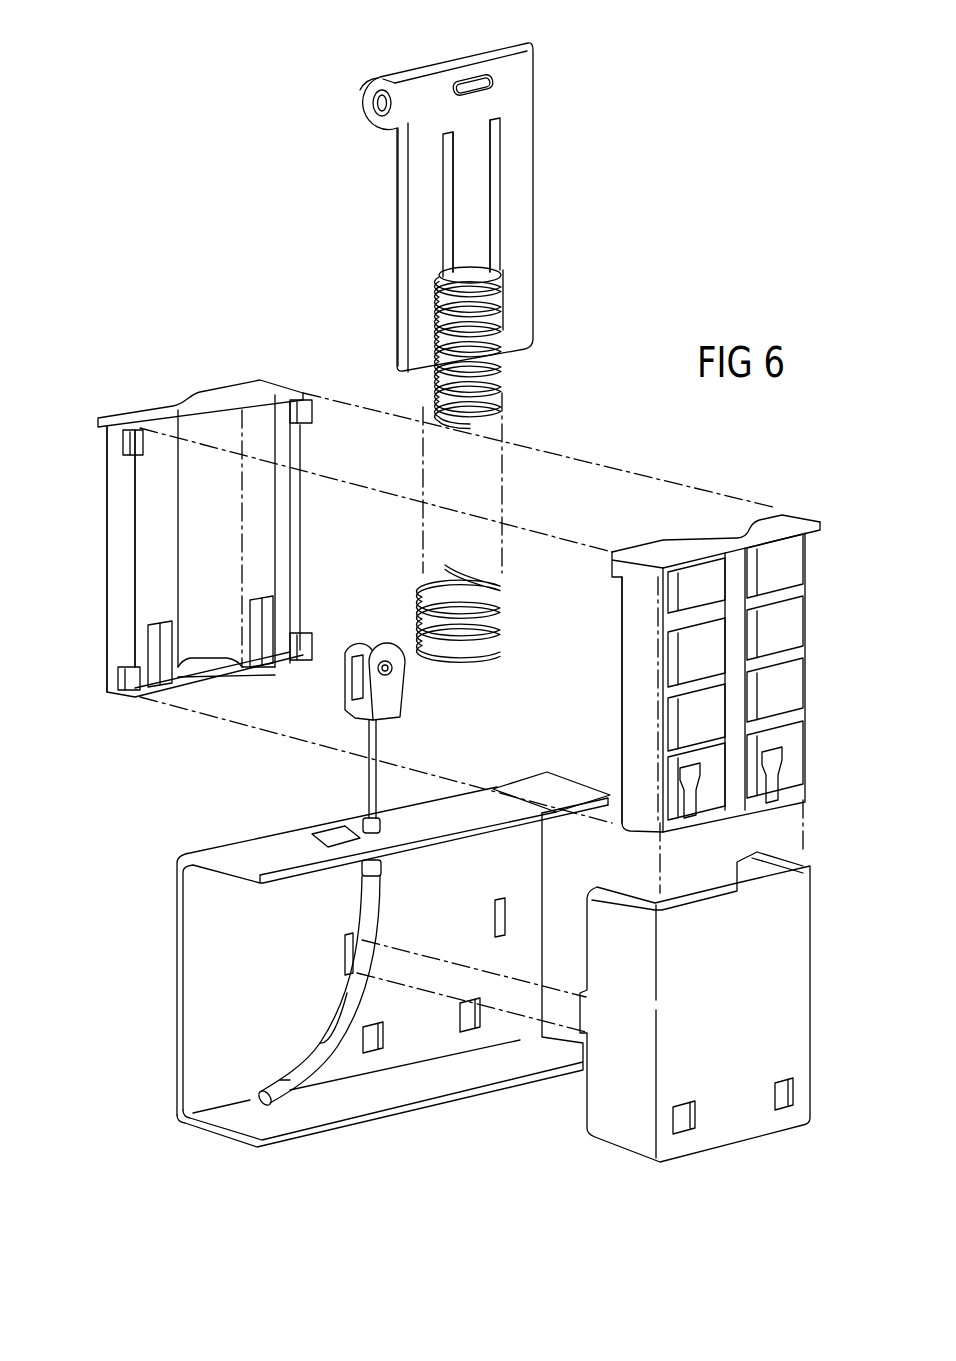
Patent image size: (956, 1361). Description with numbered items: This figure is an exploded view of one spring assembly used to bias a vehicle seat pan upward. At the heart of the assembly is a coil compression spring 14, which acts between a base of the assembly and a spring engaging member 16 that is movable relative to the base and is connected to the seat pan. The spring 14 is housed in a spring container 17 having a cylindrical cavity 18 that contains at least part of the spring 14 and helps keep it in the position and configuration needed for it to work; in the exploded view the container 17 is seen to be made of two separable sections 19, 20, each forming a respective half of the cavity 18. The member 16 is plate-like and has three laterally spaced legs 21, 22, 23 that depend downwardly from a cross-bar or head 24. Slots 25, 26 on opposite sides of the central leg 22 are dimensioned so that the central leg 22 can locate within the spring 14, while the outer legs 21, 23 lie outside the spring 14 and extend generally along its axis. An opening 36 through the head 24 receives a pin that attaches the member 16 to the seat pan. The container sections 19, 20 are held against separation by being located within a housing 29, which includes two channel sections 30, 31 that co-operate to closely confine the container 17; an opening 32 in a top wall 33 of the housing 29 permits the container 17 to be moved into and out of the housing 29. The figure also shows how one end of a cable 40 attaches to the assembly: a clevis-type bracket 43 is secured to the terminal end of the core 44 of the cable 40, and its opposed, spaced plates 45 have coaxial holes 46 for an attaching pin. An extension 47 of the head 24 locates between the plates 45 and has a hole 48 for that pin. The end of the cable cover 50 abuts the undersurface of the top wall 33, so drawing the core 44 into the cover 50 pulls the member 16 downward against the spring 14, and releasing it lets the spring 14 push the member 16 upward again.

The coil compression spring 14 is at (495, 352).
The spring engaging member 16 is at (451, 186).
The spring container 17 is at (425, 581).
The cylindrical cavity 18 is at (204, 420).
The container section 19 is at (152, 509).
The container section 20 is at (632, 608).
The outer leg 21 is at (420, 235).
The central leg 22 is at (472, 158).
The outer leg 23 is at (522, 285).
The head 24 is at (405, 78).
The slot 25 is at (447, 183).
The slot 26 is at (497, 233).
The housing 29 is at (447, 964).
The channel section 30 is at (222, 918).
The channel section 31 is at (623, 1106).
The opening 32 is at (470, 815).
The top wall 33 is at (545, 788).
The opening 36 is at (470, 80).
The cable 40 is at (305, 1046).
The clevis-type bracket 43 is at (362, 672).
The core 44 is at (368, 792).
The plates 45 is at (358, 648).
The holes 46 is at (350, 666).
The extension 47 is at (386, 80).
The hole 48 is at (373, 105).
The cable cover 50 is at (337, 1030).